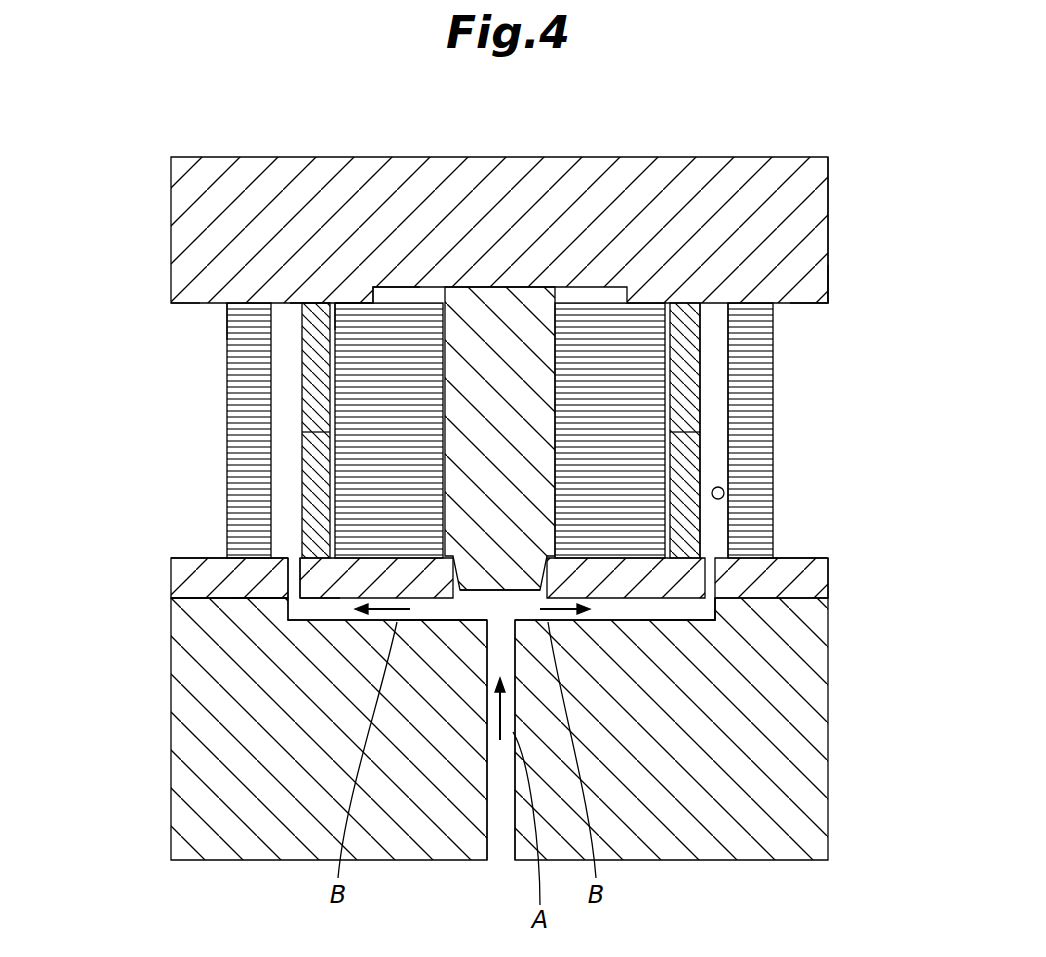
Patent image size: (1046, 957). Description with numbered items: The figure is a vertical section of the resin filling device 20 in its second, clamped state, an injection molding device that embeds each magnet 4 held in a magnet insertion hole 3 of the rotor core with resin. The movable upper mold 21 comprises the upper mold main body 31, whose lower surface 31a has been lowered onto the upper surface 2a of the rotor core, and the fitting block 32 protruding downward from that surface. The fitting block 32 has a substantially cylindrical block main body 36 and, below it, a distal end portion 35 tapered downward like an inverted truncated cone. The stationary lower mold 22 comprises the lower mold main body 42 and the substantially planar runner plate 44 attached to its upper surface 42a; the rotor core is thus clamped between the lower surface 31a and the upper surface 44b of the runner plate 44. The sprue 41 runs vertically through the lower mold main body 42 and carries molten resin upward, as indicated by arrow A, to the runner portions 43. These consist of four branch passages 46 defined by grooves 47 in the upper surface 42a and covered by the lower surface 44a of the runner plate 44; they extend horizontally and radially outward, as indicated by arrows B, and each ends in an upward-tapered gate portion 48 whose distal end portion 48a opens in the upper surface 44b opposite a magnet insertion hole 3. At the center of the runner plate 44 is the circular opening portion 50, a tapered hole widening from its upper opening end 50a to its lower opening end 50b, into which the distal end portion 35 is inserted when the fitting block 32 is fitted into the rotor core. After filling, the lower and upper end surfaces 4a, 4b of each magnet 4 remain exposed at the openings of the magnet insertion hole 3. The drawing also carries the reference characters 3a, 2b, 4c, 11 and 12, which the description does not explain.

The magnet insertion hole 3 is at (826, 282).
The upper mold main body 31 is at (830, 238).
The upper mold 21 is at (812, 312).
The upper core recess 3a is at (396, 298).
The upper surface of the rotor core 2a is at (307, 298).
The coil upper end 4c is at (353, 300).
The end surface of the magnet 4b is at (350, 312).
The resin filling device 20 is at (122, 361).
The magnet 4 is at (300, 447).
The lower surface of the upper mold main body 31a is at (228, 331).
The fitting block 32 is at (562, 368).
The distal end portion 35 is at (642, 525).
The block main body 36 is at (700, 418).
The gap 11 is at (718, 340).
The air gap 12 is at (775, 503).
The runner portion 43 is at (690, 622).
The upper opening end 50a is at (528, 583).
The runner plate 44 is at (834, 592).
The groove 47 is at (806, 559).
The lower mold 22 is at (840, 558).
The distal end portion of the gate portion 48a is at (292, 560).
The bobbin lower flange 2b is at (232, 585).
The upper surface of the runner plate 44b is at (230, 578).
The upper surface of the lower mold main body 42a is at (252, 590).
The lower surface of the runner plate 44a is at (252, 598).
The lower mold main body 42 is at (834, 777).
The branch passage 46 is at (640, 612).
The gate portion 48 is at (296, 608).
The end surface of the magnet 4a is at (298, 620).
The opening portion 50 is at (482, 622).
The lower opening end 50b is at (446, 622).
The sprue 41 is at (497, 828).